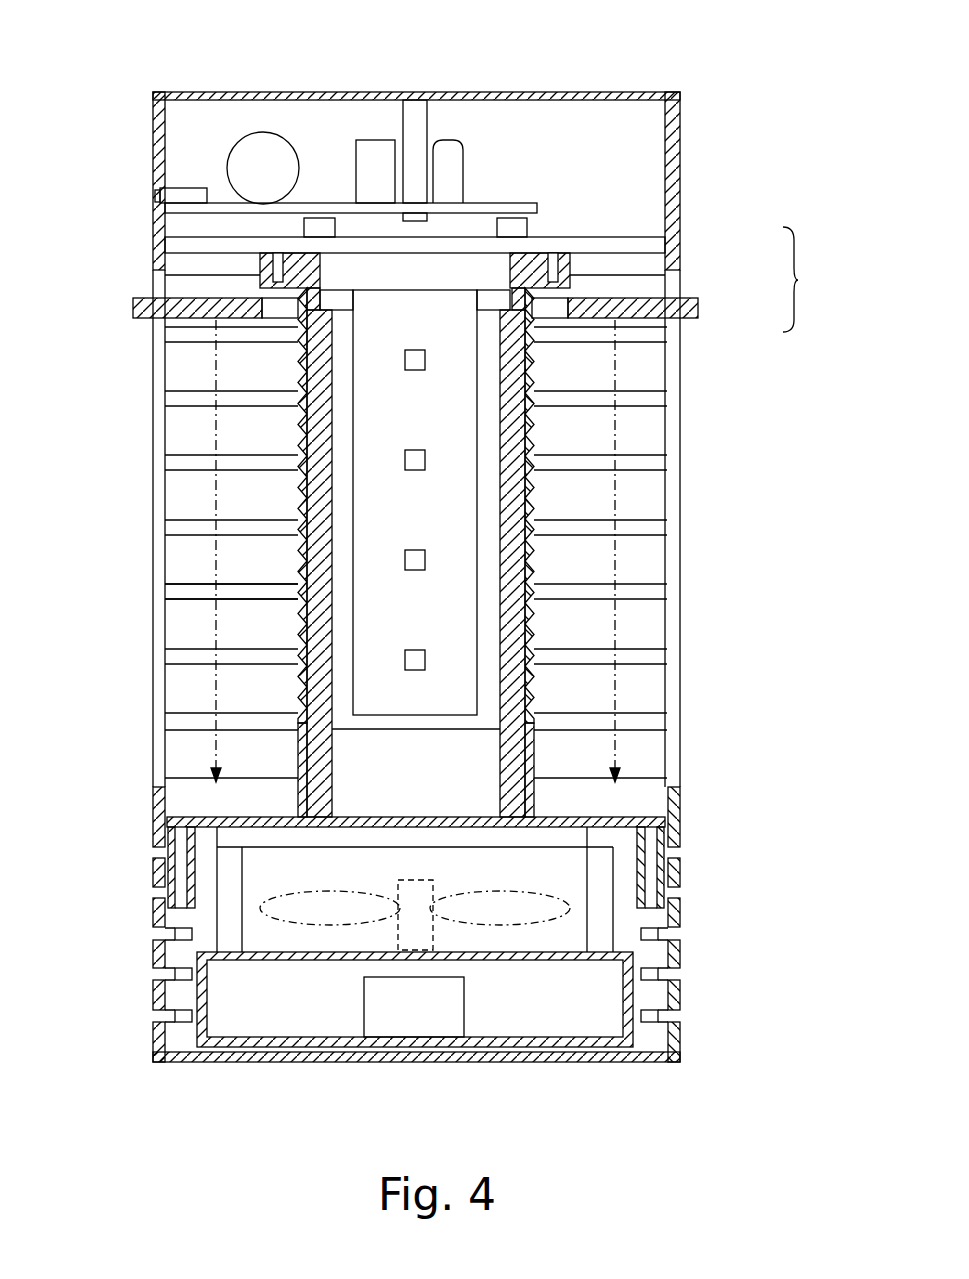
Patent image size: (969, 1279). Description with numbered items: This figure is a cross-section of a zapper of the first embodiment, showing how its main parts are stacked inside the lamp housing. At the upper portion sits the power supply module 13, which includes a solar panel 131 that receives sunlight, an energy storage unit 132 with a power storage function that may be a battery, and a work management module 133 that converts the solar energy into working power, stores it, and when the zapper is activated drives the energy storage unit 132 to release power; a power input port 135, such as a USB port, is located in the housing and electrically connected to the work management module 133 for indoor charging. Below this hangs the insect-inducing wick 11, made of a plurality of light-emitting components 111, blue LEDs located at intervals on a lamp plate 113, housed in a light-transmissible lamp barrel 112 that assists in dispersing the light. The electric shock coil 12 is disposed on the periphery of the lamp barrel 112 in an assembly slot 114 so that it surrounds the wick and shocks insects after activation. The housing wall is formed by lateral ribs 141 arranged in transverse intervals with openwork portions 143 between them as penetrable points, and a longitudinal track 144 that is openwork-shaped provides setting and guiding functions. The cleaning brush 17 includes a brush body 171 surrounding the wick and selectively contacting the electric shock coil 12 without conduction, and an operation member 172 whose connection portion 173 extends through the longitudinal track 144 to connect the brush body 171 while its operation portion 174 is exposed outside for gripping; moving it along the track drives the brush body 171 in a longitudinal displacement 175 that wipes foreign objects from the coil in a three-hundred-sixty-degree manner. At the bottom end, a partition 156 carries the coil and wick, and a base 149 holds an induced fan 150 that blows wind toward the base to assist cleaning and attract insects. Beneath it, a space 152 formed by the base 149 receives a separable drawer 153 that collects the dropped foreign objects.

The insect-inducing wick 11 is at (542, 798).
The light-emitting components 111 is at (428, 660).
The lamp barrel 112 is at (520, 762).
The lamp plate 113 is at (478, 625).
The assembly slot 114 is at (534, 580).
The electric shock coil 12 is at (532, 380).
The power supply module 13 is at (397, 86).
The solar panel 131 is at (190, 92).
The energy storage unit 132 is at (262, 140).
The work management module 133 is at (500, 203).
The power input port 135 is at (182, 190).
The lateral ribs 141 is at (195, 528).
The openwork portions 143 is at (178, 578).
The longitudinal track 144 is at (156, 488).
The base 149 is at (160, 1040).
The induced fan 150 is at (560, 918).
The space 152 is at (198, 918).
The drawer 153 is at (288, 1040).
The partition 156 is at (205, 815).
The cleaning brush 17 is at (131, 297).
The brush body 171 is at (280, 316).
The operation member 172 is at (813, 279).
The connection portion 173 is at (650, 270).
The operation portion 174 is at (700, 306).
The longitudinal displacement 175 is at (620, 463).